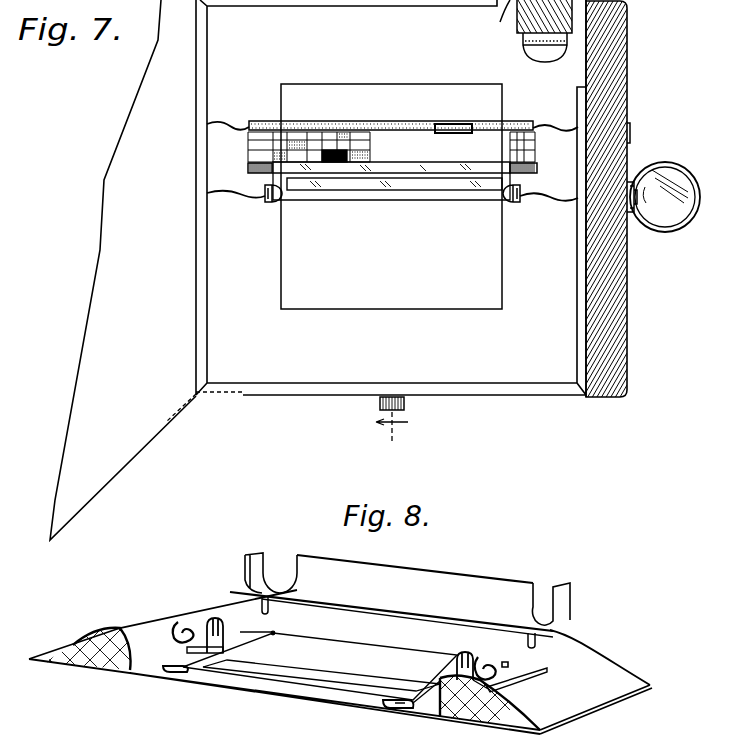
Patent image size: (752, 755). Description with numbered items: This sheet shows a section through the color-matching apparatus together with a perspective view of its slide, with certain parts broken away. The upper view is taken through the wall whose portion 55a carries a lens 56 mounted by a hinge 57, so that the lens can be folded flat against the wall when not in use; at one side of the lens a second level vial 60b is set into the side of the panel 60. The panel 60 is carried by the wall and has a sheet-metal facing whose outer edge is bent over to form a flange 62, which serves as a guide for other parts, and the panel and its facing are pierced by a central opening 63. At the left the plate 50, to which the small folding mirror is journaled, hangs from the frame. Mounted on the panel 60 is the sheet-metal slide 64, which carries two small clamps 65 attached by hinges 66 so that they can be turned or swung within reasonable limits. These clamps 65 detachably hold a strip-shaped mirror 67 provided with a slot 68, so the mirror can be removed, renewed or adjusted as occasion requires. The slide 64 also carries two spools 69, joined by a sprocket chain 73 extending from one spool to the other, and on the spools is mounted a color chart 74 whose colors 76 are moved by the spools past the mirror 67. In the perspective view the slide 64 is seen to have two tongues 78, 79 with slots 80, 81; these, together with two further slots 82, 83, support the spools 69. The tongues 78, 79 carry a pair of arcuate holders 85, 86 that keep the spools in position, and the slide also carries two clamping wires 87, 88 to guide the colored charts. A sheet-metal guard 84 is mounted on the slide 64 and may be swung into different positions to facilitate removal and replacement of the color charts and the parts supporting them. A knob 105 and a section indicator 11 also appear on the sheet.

In FIG. 7, the plate 50 is at (146, 270).
In FIG. 7, the portion of wall 55a is at (616, 22).
In FIG. 7, the lens 56 is at (673, 166).
In FIG. 7, the hinge 57 is at (632, 176).
In FIG. 7, the panel 60 is at (542, 40).
In FIG. 7, the level vial 60b is at (630, 137).
In FIG. 7, the flange 62 is at (197, 75).
In FIG. 7, the central opening 63 is at (441, 94).
In FIG. 7, the slide 64 is at (220, 138).
In FIG. 8, the slide 64 is at (145, 634).
In FIG. 7, the clamps 65 is at (275, 206).
In FIG. 8, the clamps 65 is at (180, 674).
In FIG. 7, the hinges 66 is at (265, 198).
In FIG. 7, the mirror 67 is at (322, 167).
In FIG. 8, the mirror 67 is at (238, 678).
In FIG. 7, the slot 68 is at (445, 183).
In FIG. 8, the slot 68 is at (308, 678).
In FIG. 7, the spools 69 is at (247, 168).
In FIG. 7, the sprocket chain 73 is at (461, 128).
In FIG. 7, the color chart 74 is at (484, 142).
In FIG. 7, the colors 76 is at (340, 148).
In FIG. 7, the knob 105 is at (405, 402).
In FIG. 7, the section line 11 is at (402, 427).
In FIG. 8, the tongue 78 is at (197, 622).
In FIG. 8, the tongue 79 is at (470, 658).
In FIG. 8, the slot 80 is at (210, 618).
In FIG. 8, the slot 81 is at (478, 663).
In FIG. 8, the slot 82 is at (267, 599).
In FIG. 8, the slot 83 is at (556, 636).
In FIG. 8, the sheet metal guard 84 is at (440, 579).
In FIG. 8, the holder 85 is at (193, 654).
In FIG. 8, the holder 86 is at (507, 683).
In FIG. 8, the clamping wire 87 is at (250, 637).
In FIG. 8, the clamping wire 88 is at (510, 667).